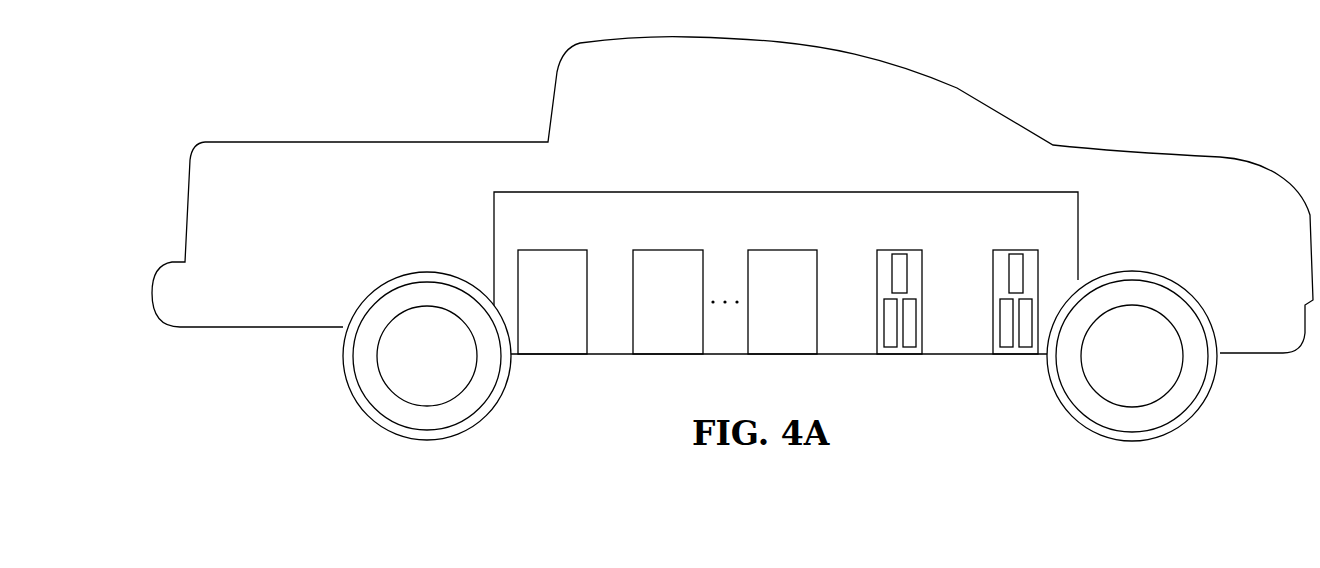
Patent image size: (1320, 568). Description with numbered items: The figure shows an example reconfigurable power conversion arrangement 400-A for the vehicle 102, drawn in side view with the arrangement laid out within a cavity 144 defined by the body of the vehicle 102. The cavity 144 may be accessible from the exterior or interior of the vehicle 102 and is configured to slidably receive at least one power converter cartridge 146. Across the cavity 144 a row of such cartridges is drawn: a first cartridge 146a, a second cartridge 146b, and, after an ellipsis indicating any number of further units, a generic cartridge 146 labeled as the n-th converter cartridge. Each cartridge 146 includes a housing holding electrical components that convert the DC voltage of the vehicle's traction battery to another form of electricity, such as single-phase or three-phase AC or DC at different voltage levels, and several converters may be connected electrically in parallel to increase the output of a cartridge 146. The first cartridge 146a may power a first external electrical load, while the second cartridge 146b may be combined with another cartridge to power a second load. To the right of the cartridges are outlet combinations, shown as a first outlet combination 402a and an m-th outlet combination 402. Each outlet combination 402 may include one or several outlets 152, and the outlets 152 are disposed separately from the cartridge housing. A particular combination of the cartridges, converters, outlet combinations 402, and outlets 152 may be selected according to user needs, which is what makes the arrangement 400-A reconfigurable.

The vehicle 102 is at (958, 88).
The cavity 144 is at (792, 192).
The first cartridge 146a is at (562, 337).
The second cartridge 146b is at (673, 337).
The power converter cartridge 146 is at (795, 337).
The outlet combination 402a is at (900, 347).
The outlet combination 402 is at (1000, 333).
The outlet 152 is at (1007, 327).
The reconfigurable power conversion arrangement 400-A is at (1268, 55).